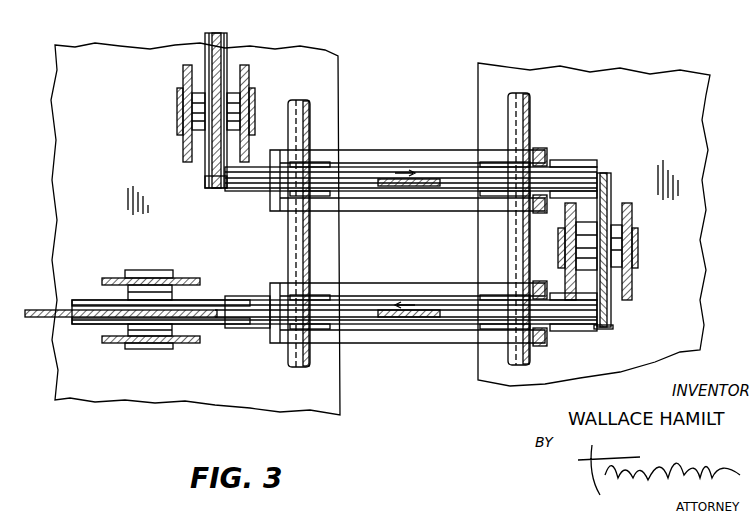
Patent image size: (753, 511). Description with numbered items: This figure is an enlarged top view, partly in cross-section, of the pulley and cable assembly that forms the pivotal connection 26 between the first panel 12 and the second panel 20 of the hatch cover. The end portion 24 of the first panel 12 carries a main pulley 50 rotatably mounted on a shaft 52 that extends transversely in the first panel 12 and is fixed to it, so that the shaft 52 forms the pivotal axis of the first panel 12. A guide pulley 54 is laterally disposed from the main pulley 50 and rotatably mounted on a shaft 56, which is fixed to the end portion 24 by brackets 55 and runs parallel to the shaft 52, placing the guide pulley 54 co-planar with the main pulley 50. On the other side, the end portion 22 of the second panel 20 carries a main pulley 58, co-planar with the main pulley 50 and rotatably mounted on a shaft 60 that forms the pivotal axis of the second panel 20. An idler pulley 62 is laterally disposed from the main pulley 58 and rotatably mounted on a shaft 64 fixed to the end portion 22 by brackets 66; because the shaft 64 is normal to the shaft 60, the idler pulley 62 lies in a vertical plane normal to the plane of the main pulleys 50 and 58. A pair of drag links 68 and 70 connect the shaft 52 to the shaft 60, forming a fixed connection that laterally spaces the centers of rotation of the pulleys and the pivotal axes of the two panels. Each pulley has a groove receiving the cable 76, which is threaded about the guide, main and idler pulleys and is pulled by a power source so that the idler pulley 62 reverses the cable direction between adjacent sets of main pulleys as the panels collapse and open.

The first panel 12 is at (80, 60).
The second panel 20 is at (700, 108).
The end portion of the second panel 22 is at (662, 125).
The end portion of the first panel 24 is at (118, 166).
The pivotal connection 26 is at (411, 88).
The main pulley 50 is at (247, 190).
The shaft 52 is at (308, 110).
The guide pulley 54 is at (90, 305).
The brackets 55 is at (118, 343).
The shaft 56 is at (168, 340).
The main pulley 58 is at (580, 253).
The shaft 60 is at (533, 108).
The idler pulley 62 is at (205, 62).
The shaft 64 is at (203, 92).
The brackets 66 is at (180, 115).
The drag link 68 is at (432, 208).
The drag link 70 is at (404, 152).
The cable 76 is at (400, 186).